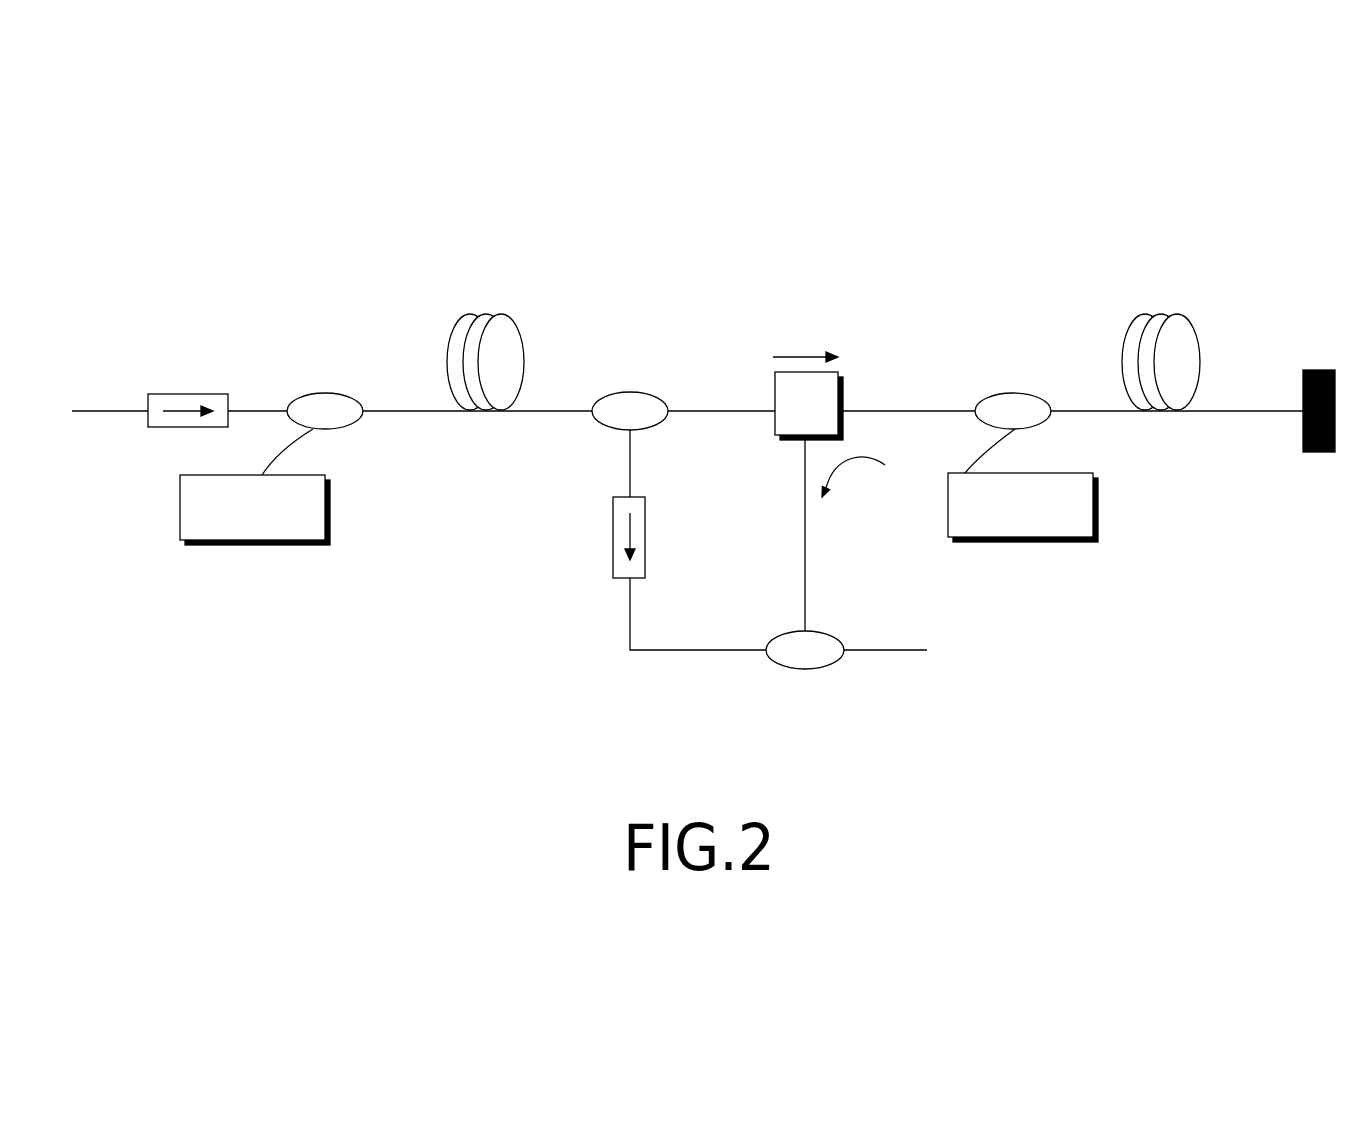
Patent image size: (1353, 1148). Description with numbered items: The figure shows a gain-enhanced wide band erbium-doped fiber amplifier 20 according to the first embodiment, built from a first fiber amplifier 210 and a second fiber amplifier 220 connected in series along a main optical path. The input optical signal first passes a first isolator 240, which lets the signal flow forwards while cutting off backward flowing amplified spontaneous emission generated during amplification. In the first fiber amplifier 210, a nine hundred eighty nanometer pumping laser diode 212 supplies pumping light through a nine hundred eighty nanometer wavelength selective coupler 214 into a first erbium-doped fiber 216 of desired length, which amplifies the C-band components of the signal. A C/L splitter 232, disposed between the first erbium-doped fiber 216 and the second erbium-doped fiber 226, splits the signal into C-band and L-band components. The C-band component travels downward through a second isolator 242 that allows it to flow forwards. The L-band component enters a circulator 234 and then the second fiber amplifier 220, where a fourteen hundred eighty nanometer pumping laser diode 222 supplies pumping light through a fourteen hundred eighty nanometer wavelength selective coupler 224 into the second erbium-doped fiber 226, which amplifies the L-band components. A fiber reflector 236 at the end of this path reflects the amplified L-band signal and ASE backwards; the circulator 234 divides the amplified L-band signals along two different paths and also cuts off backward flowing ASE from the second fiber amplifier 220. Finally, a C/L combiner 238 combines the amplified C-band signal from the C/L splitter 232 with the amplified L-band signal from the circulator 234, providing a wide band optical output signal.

The fiber amplifier 20 is at (838, 208).
The first fiber amplifier 210 is at (420, 306).
The 980 nm pumping laser diode 212 is at (275, 540).
The 980 nm wavelength selective coupler 214 is at (290, 403).
The first erbium-doped fiber 216 is at (517, 325).
The second fiber amplifier 220 is at (1084, 310).
The 1,480 nm pumping laser diode 222 is at (1063, 537).
The 1,480 nm wavelength selective coupler 224 is at (1050, 420).
The second erbium-doped fiber 226 is at (1193, 322).
The C/L splitter 232 is at (662, 422).
The circulator 234 is at (840, 377).
The fiber reflector 236 is at (1302, 438).
The C/L combiner 238 is at (843, 643).
The first isolator 240 is at (188, 397).
The second isolator 242 is at (646, 555).